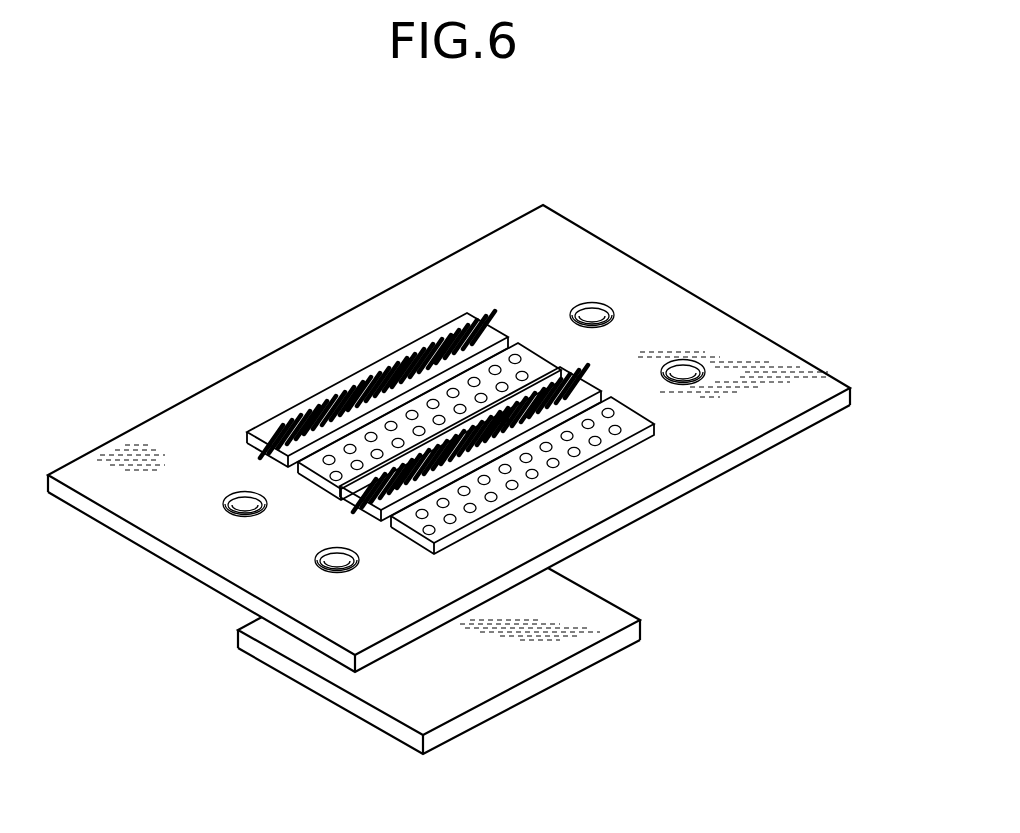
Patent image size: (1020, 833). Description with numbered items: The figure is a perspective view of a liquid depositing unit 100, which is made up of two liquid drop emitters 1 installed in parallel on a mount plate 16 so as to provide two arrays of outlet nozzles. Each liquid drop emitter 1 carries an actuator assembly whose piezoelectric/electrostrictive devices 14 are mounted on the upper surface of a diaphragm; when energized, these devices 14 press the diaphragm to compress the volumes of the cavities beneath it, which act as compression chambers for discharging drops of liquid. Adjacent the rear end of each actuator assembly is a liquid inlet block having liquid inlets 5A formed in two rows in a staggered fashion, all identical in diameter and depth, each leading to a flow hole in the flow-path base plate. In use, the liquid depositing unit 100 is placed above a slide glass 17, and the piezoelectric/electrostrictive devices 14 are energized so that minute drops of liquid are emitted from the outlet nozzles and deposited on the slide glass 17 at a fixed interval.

The liquid depositing unit 100 is at (275, 228).
The liquid drop emitter 1 is at (488, 318).
The piezoelectric/electrostrictive devices 14 is at (317, 403).
The liquid inlets 5A is at (393, 440).
The mount plate 16 is at (583, 263).
The slide glass 17 is at (603, 613).